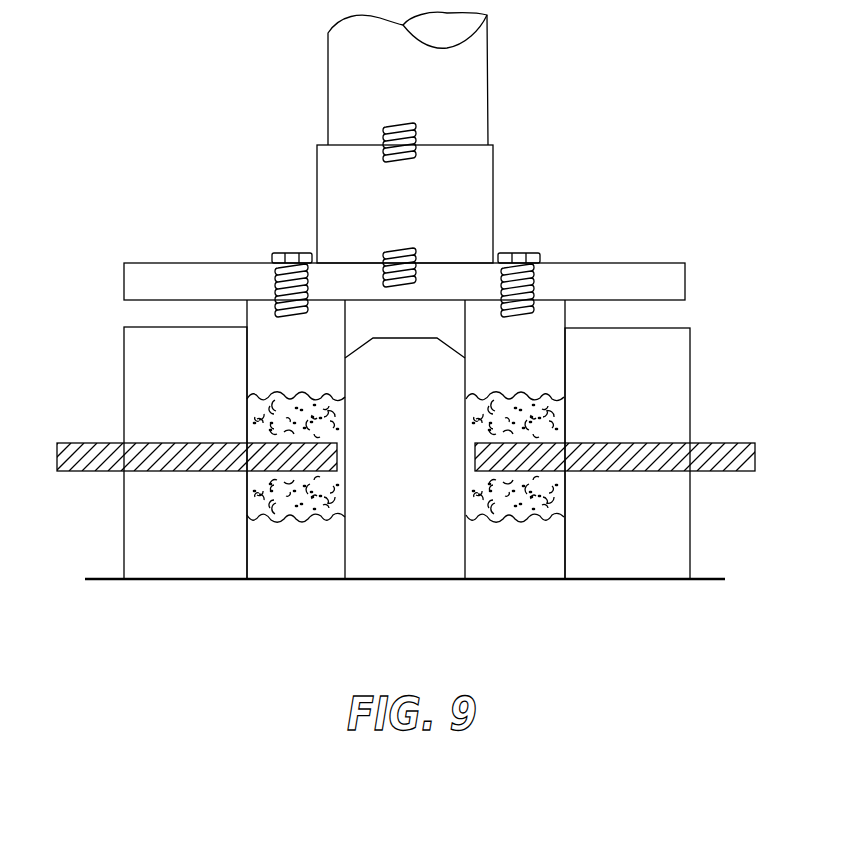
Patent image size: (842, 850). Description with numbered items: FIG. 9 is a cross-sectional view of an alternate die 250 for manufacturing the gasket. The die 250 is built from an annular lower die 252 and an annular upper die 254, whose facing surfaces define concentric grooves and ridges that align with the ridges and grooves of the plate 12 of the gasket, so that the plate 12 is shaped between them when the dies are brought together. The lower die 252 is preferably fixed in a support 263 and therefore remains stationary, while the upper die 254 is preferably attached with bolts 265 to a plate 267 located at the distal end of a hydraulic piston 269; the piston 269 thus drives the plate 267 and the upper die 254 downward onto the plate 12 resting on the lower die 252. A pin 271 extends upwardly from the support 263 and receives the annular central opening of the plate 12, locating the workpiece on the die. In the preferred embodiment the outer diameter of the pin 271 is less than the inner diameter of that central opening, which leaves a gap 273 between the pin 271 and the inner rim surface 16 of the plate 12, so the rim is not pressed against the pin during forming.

The alternate die 250 is at (229, 156).
The hydraulic piston 269 is at (477, 170).
The plate 267 is at (172, 275).
The bolts 265 is at (277, 288).
The annular upper die 254 is at (267, 317).
The annular lower die 252 is at (264, 555).
The pin 271 is at (425, 434).
The support 263 is at (363, 620).
The plate 12 is at (83, 460).
The inner rim surface 16 is at (337, 457).
The gap 273 is at (340, 470).